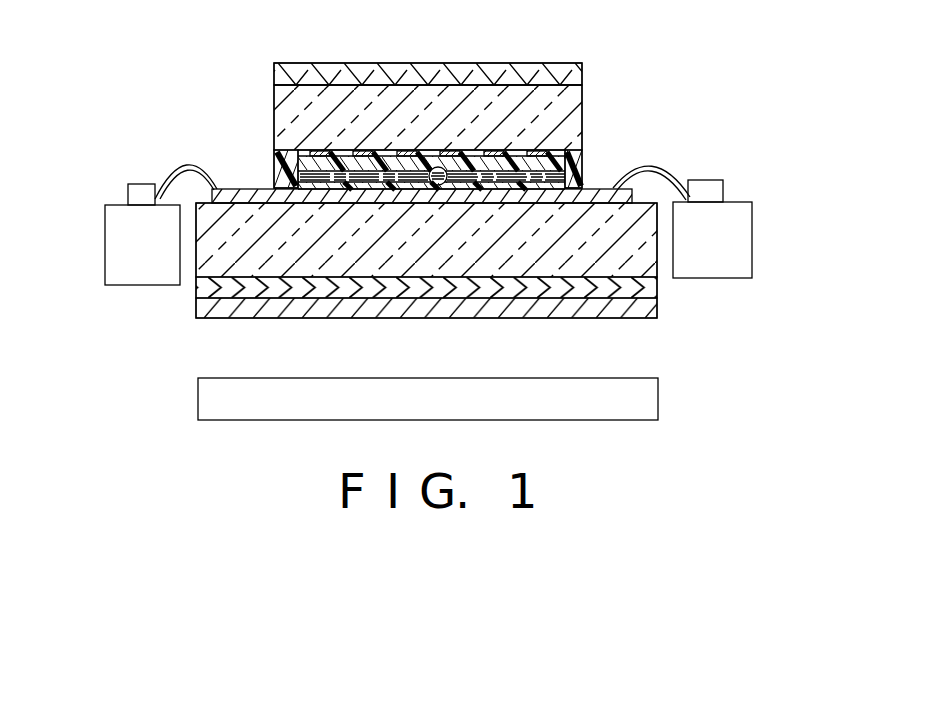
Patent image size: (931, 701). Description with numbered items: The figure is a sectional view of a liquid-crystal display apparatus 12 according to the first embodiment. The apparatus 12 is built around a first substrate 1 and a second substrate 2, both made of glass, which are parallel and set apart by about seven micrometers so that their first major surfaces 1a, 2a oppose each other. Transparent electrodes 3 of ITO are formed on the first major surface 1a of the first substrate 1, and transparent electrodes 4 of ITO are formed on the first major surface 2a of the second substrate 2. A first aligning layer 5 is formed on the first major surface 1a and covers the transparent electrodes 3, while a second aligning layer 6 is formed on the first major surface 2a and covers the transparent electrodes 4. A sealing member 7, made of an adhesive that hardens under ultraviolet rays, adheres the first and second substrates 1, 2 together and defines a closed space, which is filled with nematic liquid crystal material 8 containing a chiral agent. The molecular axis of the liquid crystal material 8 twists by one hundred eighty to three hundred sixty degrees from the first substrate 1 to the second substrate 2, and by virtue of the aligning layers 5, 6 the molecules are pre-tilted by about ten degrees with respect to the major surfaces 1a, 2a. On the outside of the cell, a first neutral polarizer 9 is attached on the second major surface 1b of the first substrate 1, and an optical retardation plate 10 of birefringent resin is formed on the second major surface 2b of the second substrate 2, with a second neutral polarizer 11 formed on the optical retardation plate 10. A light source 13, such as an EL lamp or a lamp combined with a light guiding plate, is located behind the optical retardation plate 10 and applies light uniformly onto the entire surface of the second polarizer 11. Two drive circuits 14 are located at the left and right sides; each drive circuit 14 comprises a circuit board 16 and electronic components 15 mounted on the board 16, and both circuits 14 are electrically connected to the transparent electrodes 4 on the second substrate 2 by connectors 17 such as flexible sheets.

The first substrate 1 is at (478, 95).
The first major surface of first substrate 1a is at (277, 135).
The second major surface of first substrate 1b is at (538, 88).
The second substrate 2 is at (655, 263).
The first major surface of second substrate 2a is at (412, 194).
The second major surface of second substrate 2b is at (630, 268).
The transparent electrodes 3 is at (556, 153).
The transparent electrodes 4 is at (243, 189).
The first aligning layer 5 is at (550, 168).
The second aligning layer 6 is at (438, 190).
The sealing member 7 is at (280, 180).
The nematic liquid crystal material 8 is at (555, 172).
The first neutral polarizer 9 is at (357, 72).
The optical retardation plate 10 is at (585, 283).
The second neutral polarizer 11 is at (508, 295).
The liquid-crystal display apparatus 12 is at (660, 106).
The light source 13 is at (660, 398).
The drive circuits 14 is at (764, 202).
The electronic components 15 is at (707, 183).
The circuit board 16 is at (743, 242).
The connectors 17 is at (667, 167).